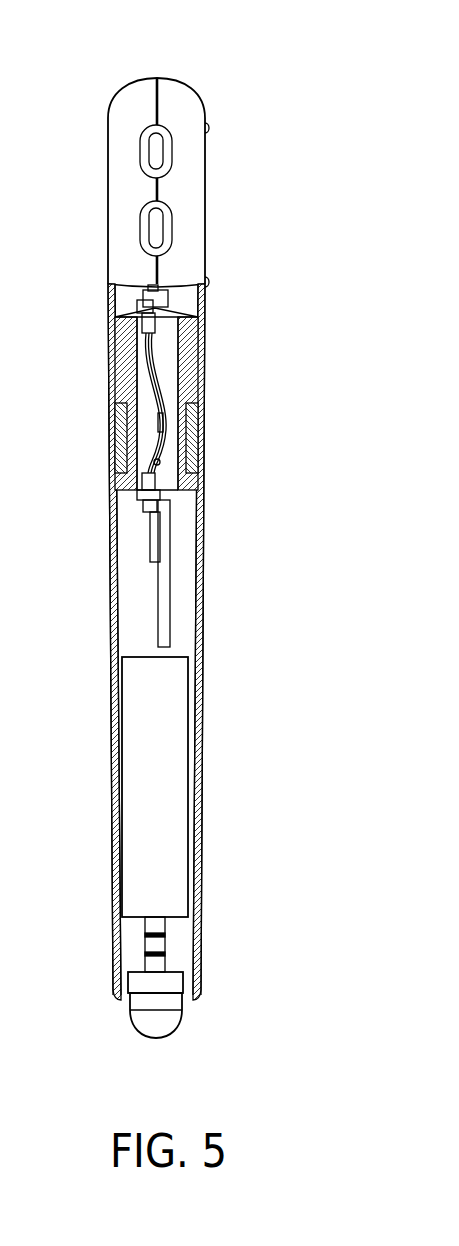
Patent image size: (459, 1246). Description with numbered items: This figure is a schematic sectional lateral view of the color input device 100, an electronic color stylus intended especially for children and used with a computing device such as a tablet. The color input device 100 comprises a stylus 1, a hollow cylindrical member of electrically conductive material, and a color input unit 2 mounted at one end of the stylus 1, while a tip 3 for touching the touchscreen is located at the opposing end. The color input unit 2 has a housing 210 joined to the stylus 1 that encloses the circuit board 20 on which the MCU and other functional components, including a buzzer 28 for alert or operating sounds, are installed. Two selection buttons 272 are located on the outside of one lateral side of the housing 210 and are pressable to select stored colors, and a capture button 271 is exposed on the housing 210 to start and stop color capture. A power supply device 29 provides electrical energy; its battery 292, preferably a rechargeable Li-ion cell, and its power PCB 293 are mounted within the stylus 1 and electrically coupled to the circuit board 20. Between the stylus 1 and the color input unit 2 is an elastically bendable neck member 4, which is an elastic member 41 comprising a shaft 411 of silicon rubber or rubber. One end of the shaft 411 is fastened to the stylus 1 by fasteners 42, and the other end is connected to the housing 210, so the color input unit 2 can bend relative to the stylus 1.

The stylus 1 is at (202, 683).
The color input unit 2 is at (163, 78).
The tip 3 is at (145, 1017).
The neck member 4 is at (206, 378).
The circuit board 20 is at (163, 294).
The buzzer 28 is at (152, 527).
The power supply device 29 is at (113, 775).
The elastic member 41 is at (200, 398).
The fastener 42 is at (120, 433).
The color input device 100 is at (208, 777).
The housing 210 is at (173, 100).
The capture button 271 is at (208, 128).
The selection button 272 is at (147, 147).
The battery 292 is at (135, 700).
The power PCB 293 is at (158, 585).
The shaft 411 is at (130, 373).